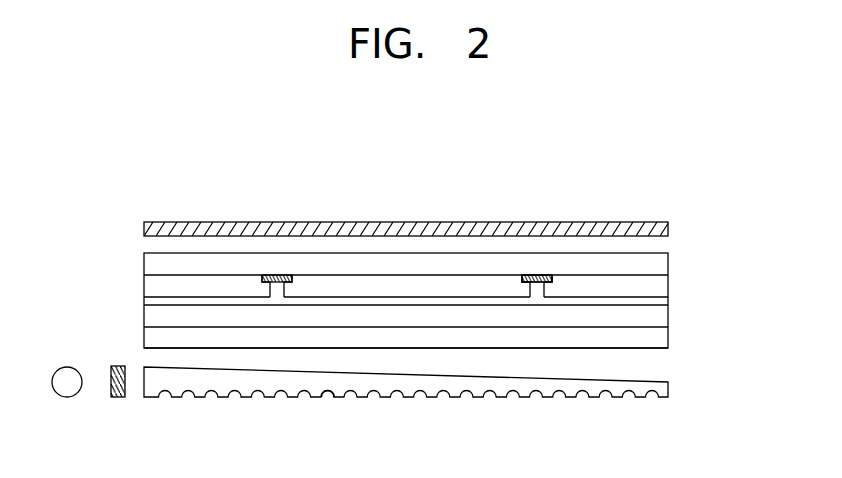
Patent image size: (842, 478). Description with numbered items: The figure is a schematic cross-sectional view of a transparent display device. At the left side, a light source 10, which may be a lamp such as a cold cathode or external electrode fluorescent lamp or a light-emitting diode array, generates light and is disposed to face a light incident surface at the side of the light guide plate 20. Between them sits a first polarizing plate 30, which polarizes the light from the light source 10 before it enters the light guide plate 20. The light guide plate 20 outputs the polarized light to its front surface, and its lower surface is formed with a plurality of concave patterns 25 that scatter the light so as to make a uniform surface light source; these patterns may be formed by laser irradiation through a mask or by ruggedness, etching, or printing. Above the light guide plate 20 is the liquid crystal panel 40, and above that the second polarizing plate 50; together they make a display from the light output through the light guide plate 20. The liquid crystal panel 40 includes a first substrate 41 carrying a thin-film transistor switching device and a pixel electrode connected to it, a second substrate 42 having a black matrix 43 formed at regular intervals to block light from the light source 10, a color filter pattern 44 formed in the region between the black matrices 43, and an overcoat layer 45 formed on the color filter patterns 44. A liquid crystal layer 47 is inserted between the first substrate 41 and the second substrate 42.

The light source 10 is at (67, 397).
The light guide plate 20 is at (668, 390).
The concave patterns 25 is at (328, 391).
The first polarizing plate 30 is at (118, 397).
The liquid crystal panel 40 is at (727, 256).
The first substrate 41 is at (668, 336).
The second substrate 42 is at (668, 268).
The black matrix 43 is at (536, 275).
The color filter pattern 44 is at (668, 283).
The overcoat layer 45 is at (668, 300).
The liquid crystal layer 47 is at (668, 318).
The second polarizing plate 50 is at (668, 228).